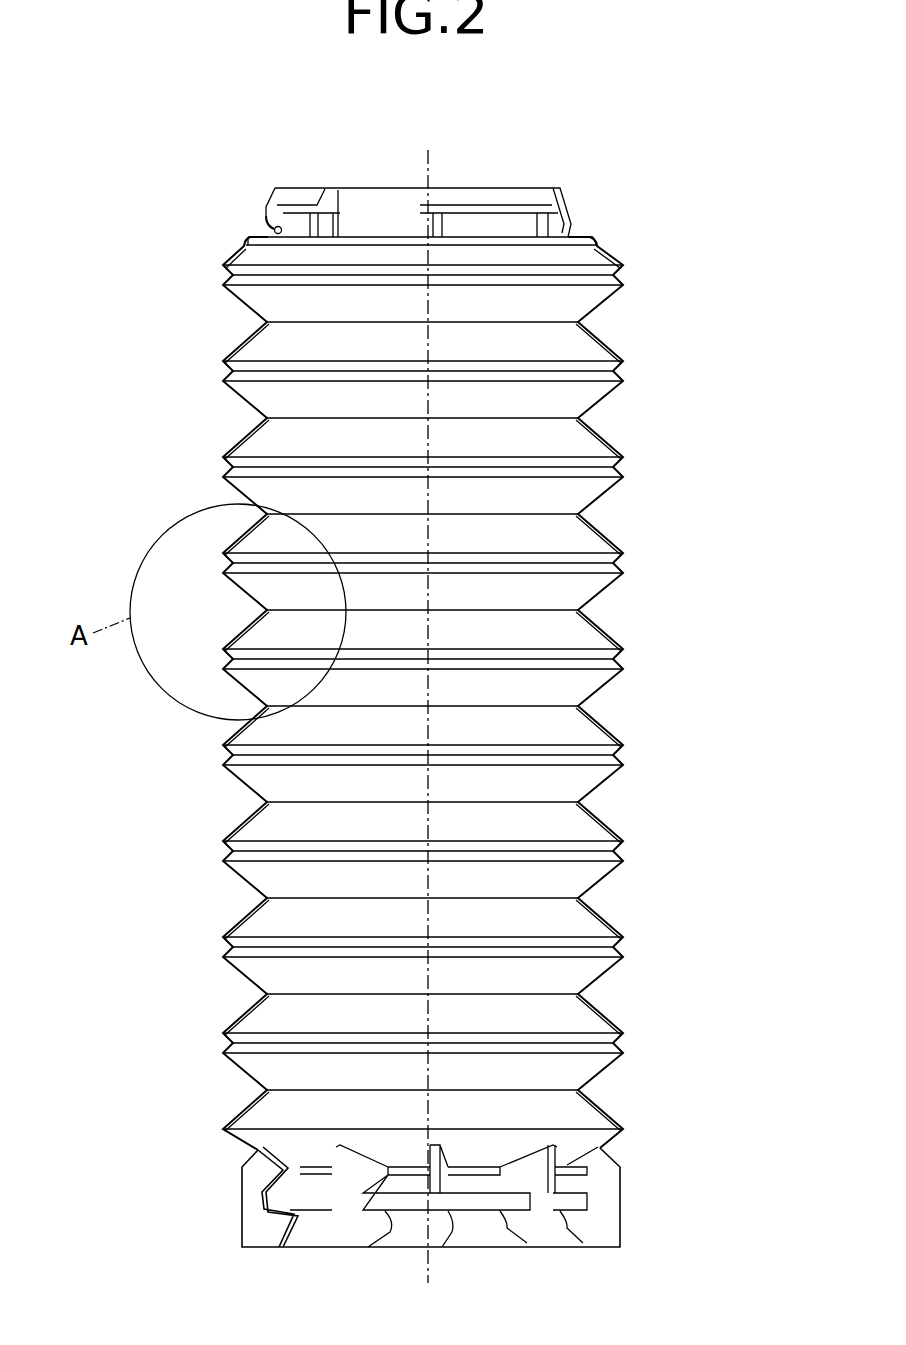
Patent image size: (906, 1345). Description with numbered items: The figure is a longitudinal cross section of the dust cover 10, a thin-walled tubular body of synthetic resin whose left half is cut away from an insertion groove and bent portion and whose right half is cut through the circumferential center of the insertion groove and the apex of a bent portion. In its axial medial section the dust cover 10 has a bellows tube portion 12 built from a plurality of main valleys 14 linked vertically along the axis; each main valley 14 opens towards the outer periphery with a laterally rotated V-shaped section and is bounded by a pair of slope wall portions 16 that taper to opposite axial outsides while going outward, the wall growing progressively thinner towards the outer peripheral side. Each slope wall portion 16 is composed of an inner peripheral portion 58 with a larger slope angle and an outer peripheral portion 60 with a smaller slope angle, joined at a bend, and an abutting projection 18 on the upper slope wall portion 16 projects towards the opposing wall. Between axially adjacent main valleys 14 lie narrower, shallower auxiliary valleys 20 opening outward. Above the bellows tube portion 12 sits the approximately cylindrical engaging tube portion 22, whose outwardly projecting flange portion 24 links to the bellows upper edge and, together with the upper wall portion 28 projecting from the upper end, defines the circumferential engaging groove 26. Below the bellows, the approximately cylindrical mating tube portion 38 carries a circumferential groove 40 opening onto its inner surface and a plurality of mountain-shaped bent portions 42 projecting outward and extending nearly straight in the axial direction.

The dust cover 10 is at (652, 180).
The bellows tube portion 12 is at (675, 282).
The main valley 14 is at (620, 324).
The slope wall portion 16 is at (477, 697).
The abutting projection 18 is at (262, 416).
The auxiliary valley 20 is at (214, 370).
The engaging tube portion 22 is at (580, 196).
The flange portion 24 is at (256, 236).
The engaging groove 26 is at (282, 229).
The upper wall portion 28 is at (268, 227).
The mating tube portion 38 is at (636, 1222).
The circumferential groove 40 is at (275, 1200).
The bent portion 42 is at (622, 1196).
The inner peripheral portion 58 is at (603, 412).
The outer peripheral portion 60 is at (613, 388).